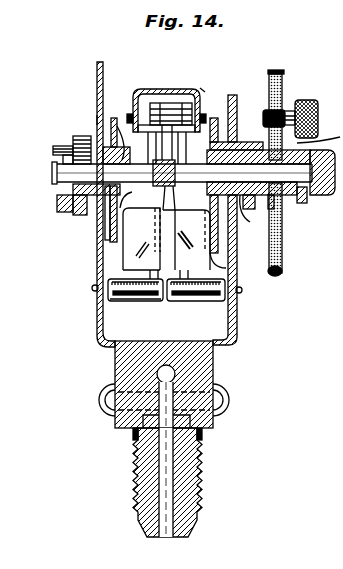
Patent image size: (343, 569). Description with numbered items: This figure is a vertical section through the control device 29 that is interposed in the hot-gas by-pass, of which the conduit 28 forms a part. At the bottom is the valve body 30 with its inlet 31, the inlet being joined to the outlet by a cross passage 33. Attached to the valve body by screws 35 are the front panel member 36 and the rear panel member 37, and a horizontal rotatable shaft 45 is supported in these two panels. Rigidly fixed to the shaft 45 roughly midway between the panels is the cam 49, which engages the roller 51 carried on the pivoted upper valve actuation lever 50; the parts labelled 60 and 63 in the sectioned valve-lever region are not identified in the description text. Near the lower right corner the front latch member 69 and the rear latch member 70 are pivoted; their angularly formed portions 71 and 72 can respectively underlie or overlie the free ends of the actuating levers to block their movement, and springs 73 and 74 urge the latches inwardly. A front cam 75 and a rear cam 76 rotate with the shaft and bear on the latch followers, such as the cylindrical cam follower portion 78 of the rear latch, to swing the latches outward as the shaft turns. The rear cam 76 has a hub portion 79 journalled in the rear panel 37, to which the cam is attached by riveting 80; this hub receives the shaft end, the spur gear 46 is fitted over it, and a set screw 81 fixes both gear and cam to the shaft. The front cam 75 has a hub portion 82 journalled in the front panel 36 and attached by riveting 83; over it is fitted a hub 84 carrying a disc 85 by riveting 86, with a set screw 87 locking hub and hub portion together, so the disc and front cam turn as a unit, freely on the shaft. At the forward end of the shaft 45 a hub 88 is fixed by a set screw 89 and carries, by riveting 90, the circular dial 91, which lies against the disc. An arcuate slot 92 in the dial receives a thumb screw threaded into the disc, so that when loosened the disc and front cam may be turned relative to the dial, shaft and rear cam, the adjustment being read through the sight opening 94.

The conduit 28 is at (339, 368).
The control device 29 is at (68, 380).
The valve body 30 is at (176, 376).
The inlet 31 is at (137, 464).
The cross passage 33 is at (156, 373).
The screws 35 is at (105, 413).
The front panel member 36 is at (230, 95).
The rear panel member 37 is at (97, 70).
The horizontal rotatable shaft 45 is at (55, 176).
The spur gear 46 is at (78, 218).
The cam 49 is at (164, 120).
The upper valve actuation lever 50 is at (176, 114).
The roller 51 is at (188, 110).
The cap 60 is at (150, 92).
The screw 63 is at (136, 110).
The front latch member 69 is at (107, 284).
The rear latch member 70 is at (160, 260).
The angularly formed portion 71 is at (205, 88).
The angularly formed portion 72 is at (172, 213).
The spring 73 is at (207, 302).
The spring 74 is at (133, 302).
The front cam 75 is at (238, 273).
The rear cam 76 is at (110, 230).
The cylindrical cam follower portion 78 is at (118, 137).
The hub portion 79 is at (97, 121).
The riveting 80 is at (118, 213).
The set screw 81 is at (62, 205).
The hub portion 82 is at (246, 146).
The riveting 83 is at (198, 192).
The hub 84 is at (261, 141).
The disc 85 is at (268, 73).
The riveting 86 is at (320, 135).
The set screw 87 is at (249, 210).
The hub 88 is at (323, 197).
The set screw 89 is at (302, 204).
The riveting 90 is at (278, 200).
The circular dial 91 is at (282, 73).
The arcuate slot 92 is at (293, 101).
The sight opening 94 is at (282, 245).